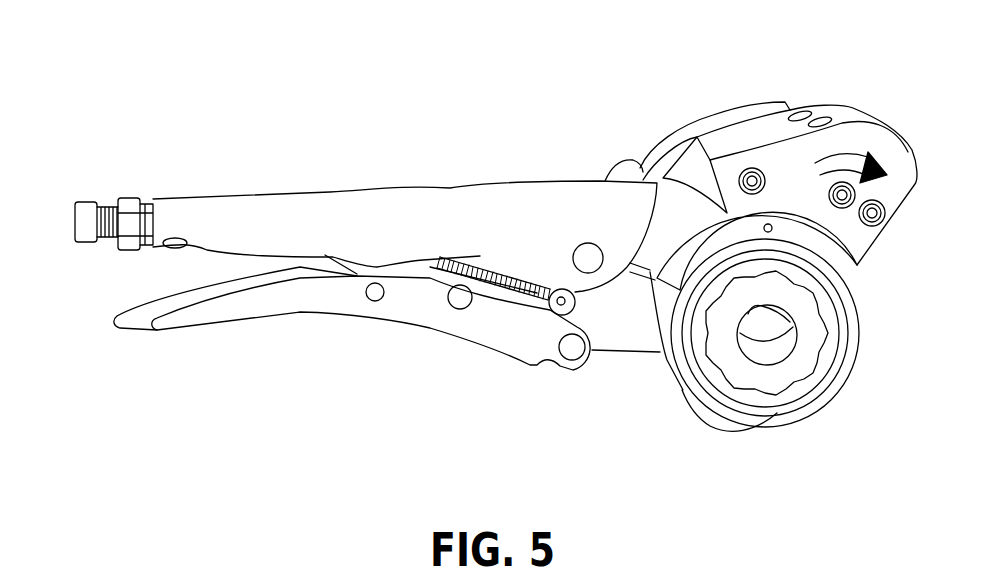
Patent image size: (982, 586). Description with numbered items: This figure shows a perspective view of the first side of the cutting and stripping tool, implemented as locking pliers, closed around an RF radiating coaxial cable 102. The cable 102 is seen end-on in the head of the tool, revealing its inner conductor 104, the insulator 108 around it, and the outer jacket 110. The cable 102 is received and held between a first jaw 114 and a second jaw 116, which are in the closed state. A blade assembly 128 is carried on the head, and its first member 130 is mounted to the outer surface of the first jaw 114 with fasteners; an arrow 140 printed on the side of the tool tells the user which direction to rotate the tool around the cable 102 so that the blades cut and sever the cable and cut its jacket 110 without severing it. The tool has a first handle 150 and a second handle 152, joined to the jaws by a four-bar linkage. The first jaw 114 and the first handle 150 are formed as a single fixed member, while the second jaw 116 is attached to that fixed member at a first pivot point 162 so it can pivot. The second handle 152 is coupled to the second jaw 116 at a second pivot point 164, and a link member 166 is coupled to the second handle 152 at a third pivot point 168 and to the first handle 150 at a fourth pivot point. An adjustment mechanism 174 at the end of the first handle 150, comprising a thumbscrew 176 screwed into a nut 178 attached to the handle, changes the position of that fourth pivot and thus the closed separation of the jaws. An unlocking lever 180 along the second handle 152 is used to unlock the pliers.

The RF radiating coaxial cable 102 is at (772, 262).
The inner conductor 104 is at (793, 353).
The insulator 108 is at (768, 392).
The jacket 110 is at (862, 338).
The first jaw 114 is at (859, 240).
The second jaw 116 is at (710, 417).
The blade assembly 128 is at (789, 144).
The first member 130 is at (880, 135).
The arrow 140 is at (912, 184).
The first handle 150 is at (405, 225).
The second handle 152 is at (392, 348).
The first pivot point 162 is at (590, 253).
The second pivot point 164 is at (568, 352).
The link member 166 is at (371, 268).
The third pivot point 168 is at (460, 300).
The adjustment mechanism 174 is at (109, 181).
The thumbscrew 176 is at (72, 223).
The nut 178 is at (130, 200).
The unlocking lever 180 is at (130, 323).